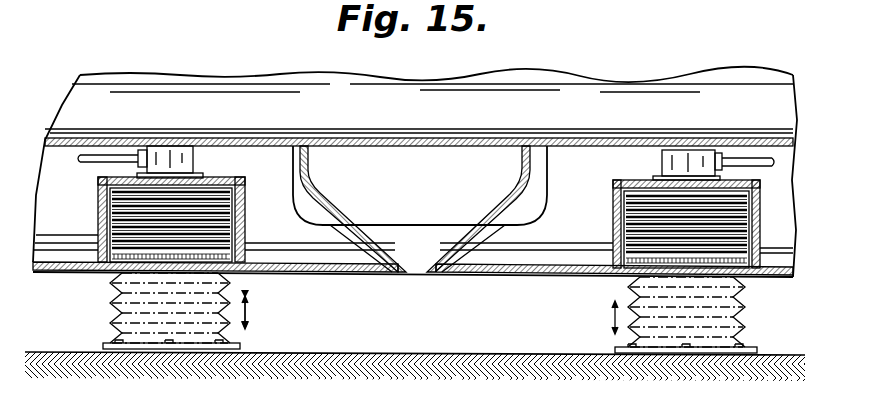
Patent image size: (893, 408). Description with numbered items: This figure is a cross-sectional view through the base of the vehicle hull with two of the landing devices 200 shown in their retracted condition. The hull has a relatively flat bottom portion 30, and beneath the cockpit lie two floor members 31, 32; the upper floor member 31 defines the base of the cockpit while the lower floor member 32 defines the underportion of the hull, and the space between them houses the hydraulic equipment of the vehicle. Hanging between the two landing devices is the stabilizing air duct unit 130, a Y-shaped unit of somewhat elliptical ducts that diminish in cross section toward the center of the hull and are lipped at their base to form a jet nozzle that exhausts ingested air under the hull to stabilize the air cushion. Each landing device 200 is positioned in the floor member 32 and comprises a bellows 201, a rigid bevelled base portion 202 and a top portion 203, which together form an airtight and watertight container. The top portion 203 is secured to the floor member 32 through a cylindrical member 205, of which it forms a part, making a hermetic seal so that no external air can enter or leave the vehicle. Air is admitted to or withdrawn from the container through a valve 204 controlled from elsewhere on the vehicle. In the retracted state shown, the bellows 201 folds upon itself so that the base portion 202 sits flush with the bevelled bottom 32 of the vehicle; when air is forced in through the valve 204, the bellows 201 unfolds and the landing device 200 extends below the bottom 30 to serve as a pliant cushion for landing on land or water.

The floor member 31 is at (383, 138).
The stabilizing air duct unit 130 is at (453, 168).
The floor member 32 is at (323, 273).
The bottom portion 30 is at (470, 277).
The landing device 200 is at (222, 175).
The bellows 201 is at (140, 255).
The base portion 202 is at (233, 277).
The top portion 203 is at (125, 177).
The valve 204 is at (180, 153).
The cylindrical member 205 is at (97, 227).